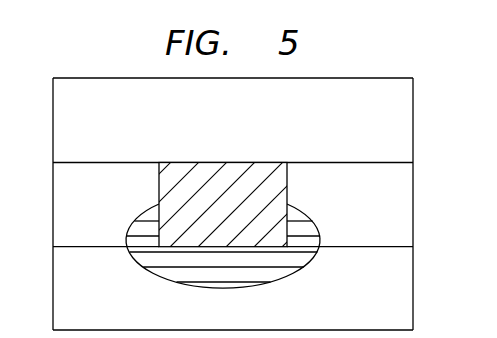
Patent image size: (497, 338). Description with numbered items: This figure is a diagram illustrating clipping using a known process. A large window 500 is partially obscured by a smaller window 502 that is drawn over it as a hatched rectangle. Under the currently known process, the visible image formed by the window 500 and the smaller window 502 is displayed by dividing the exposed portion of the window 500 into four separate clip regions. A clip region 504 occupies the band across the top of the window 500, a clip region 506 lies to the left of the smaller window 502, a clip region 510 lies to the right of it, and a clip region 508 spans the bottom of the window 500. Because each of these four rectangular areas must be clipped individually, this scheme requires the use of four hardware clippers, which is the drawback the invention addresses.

The window 500 is at (372, 78).
The smaller window 502 is at (205, 216).
The clip region 504 is at (205, 132).
The clip region 506 is at (77, 216).
The clip region 508 is at (77, 312).
The clip region 510 is at (352, 216).